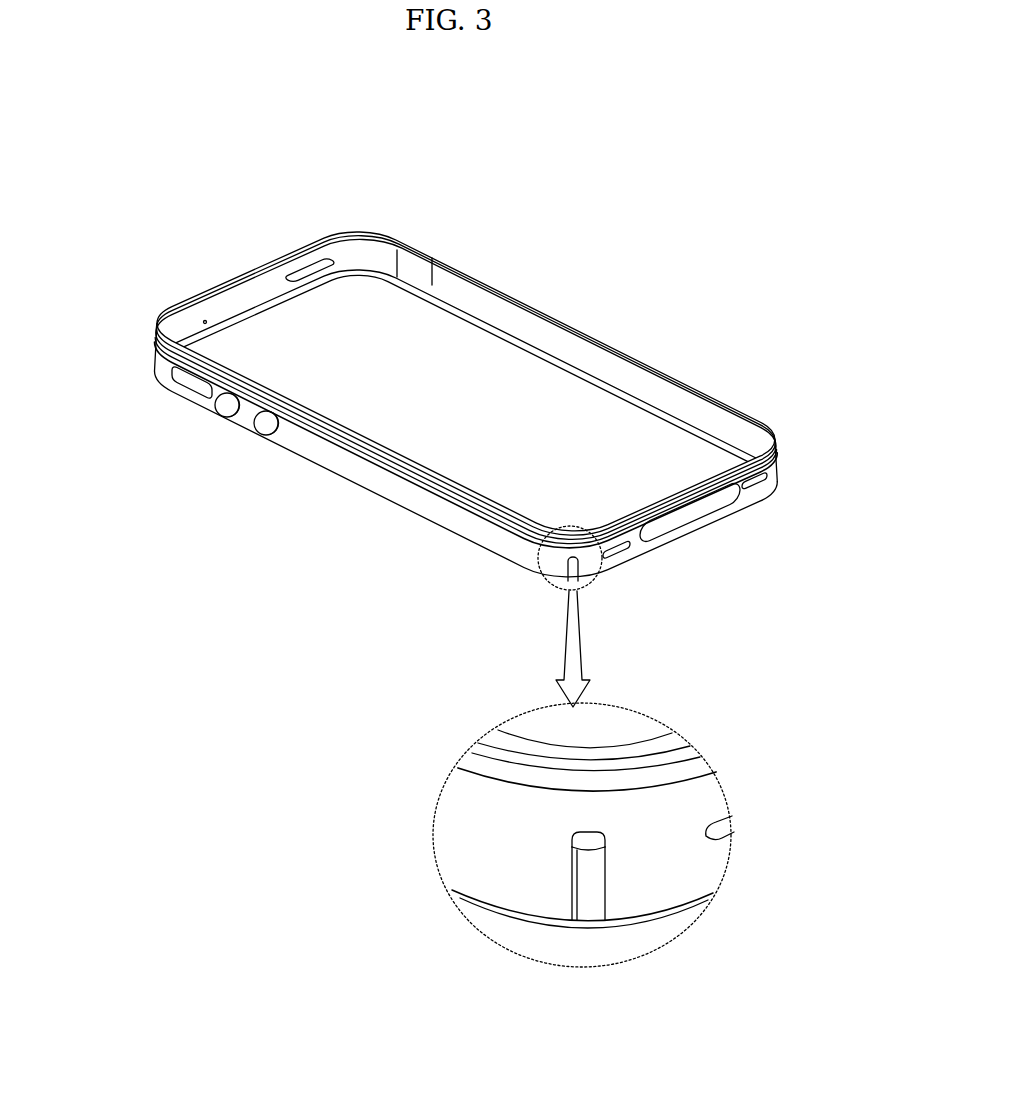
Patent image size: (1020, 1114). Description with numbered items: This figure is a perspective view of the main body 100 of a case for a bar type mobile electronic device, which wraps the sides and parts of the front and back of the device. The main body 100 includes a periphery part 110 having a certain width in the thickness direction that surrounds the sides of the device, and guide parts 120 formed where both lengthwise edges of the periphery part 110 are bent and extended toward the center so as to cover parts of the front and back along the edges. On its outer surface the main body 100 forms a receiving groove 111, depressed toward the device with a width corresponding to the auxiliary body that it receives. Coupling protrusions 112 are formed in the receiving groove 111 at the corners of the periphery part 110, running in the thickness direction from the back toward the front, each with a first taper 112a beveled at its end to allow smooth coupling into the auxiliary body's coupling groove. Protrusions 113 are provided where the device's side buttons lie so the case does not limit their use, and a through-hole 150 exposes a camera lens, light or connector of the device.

The main body 100 is at (688, 329).
The periphery part 110 is at (340, 455).
The receiving groove 111 is at (427, 500).
The coupling protrusion 112 is at (540, 575).
The first taper 112a is at (590, 840).
The protrusion 113 is at (263, 423).
The guide part 120 is at (503, 327).
The through-hole 150 is at (290, 275).